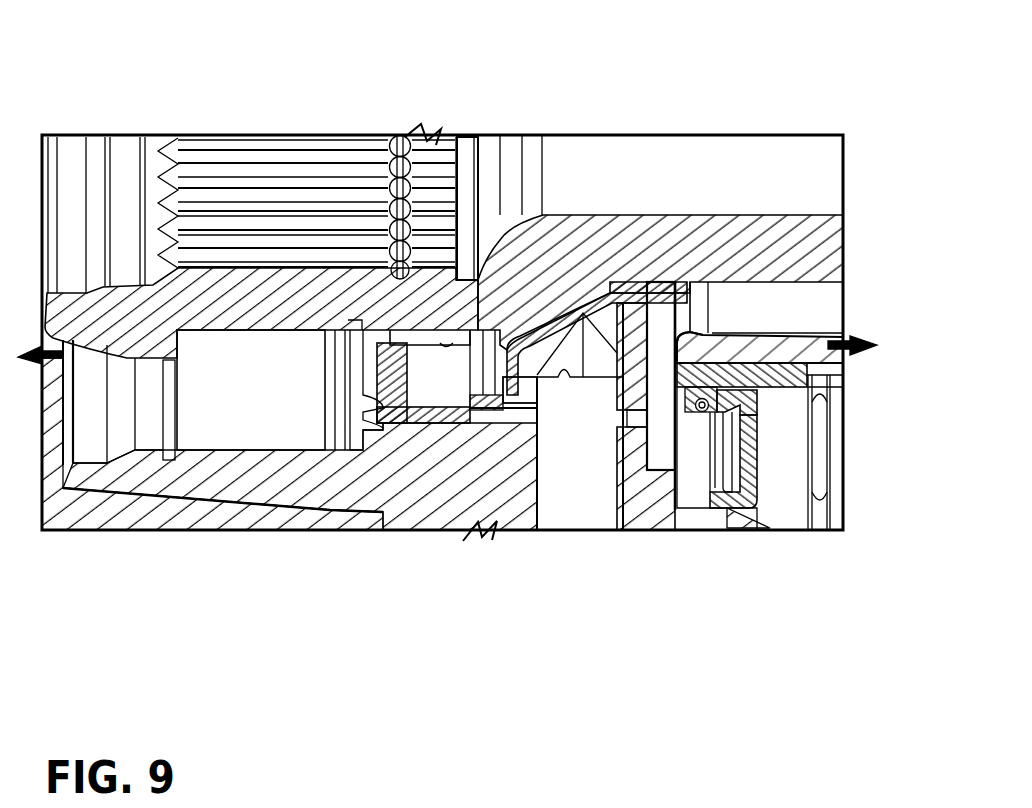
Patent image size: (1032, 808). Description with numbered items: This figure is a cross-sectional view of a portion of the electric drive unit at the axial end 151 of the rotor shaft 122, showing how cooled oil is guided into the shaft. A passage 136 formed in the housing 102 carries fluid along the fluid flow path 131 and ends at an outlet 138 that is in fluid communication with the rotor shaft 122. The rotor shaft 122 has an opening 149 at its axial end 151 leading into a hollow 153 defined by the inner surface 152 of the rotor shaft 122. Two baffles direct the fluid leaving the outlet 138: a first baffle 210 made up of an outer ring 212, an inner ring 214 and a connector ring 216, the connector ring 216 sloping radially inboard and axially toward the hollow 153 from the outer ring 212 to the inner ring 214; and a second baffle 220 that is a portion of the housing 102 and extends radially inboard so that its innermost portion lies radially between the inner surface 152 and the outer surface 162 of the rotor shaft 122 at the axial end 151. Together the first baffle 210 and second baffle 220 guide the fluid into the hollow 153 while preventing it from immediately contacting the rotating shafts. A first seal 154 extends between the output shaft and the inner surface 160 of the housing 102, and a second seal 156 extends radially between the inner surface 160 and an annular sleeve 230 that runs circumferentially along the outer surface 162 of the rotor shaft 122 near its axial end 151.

The housing 102 is at (435, 477).
The first seal 154 is at (397, 325).
The outer ring 212 is at (500, 240).
The opening 149 is at (682, 316).
The first baffle 210 is at (551, 317).
The inner surface of the housing 160 is at (407, 425).
The passage 136 is at (513, 495).
The outlet 138 is at (541, 380).
The fluid flow path 131 is at (603, 488).
The connector ring 216 is at (583, 300).
The second baffle 220 is at (635, 347).
The axial end of the rotor shaft 151 is at (652, 330).
The inner ring 214 is at (658, 312).
The hollow 153 is at (810, 306).
The inner surface of the rotor shaft 152 is at (775, 333).
The rotor shaft 122 is at (825, 345).
The outer surface of the rotor shaft 162 is at (745, 374).
The annular sleeve 230 is at (717, 393).
The second seal 156 is at (757, 450).